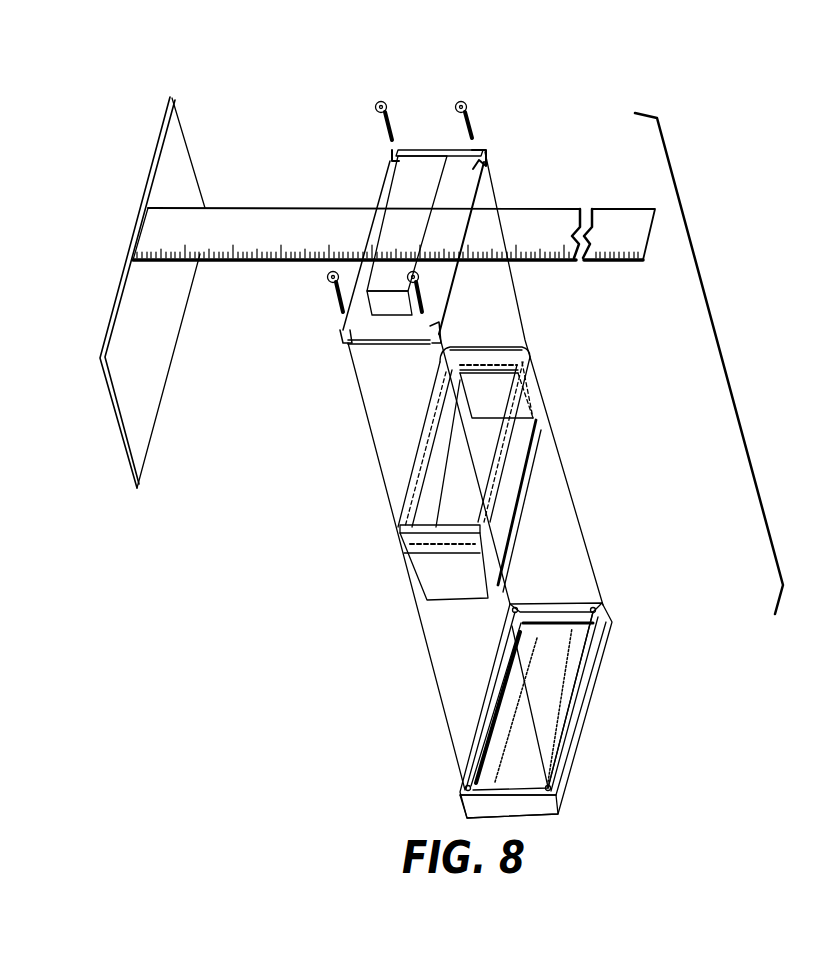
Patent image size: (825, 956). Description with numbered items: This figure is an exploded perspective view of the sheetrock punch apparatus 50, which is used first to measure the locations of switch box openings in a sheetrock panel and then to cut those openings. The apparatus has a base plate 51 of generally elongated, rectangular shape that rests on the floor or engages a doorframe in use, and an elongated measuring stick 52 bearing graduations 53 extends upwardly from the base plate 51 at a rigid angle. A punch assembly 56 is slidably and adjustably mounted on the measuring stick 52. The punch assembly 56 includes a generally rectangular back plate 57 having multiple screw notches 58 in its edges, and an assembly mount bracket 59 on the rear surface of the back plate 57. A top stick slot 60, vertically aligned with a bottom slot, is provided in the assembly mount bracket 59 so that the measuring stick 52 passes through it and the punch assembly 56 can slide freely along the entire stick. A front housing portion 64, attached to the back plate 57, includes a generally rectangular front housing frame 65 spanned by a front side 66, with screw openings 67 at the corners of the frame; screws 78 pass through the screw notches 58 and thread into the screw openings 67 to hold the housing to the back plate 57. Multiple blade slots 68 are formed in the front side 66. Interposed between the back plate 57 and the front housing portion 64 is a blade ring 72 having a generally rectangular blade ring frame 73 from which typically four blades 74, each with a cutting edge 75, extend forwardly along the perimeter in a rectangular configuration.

The sheetrock punch apparatus 50 is at (708, 694).
The base plate 51 is at (156, 384).
The measuring stick 52 is at (268, 222).
The graduations 53 is at (218, 262).
The punch assembly 56 is at (552, 370).
The back plate 57 is at (396, 342).
The screw notches 58 is at (393, 148).
The assembly mount bracket 59 is at (400, 212).
The top stick slot 60 is at (437, 223).
The front housing portion 64 is at (557, 712).
The front housing frame 65 is at (549, 806).
The front side 66 is at (566, 699).
The screw openings 67 is at (596, 603).
The blade slots 68 is at (504, 686).
The blade ring 72 is at (396, 528).
The blade ring frame 73 is at (523, 400).
The blades 74 is at (522, 463).
The cutting edge 75 is at (442, 603).
The screws 78 is at (376, 106).